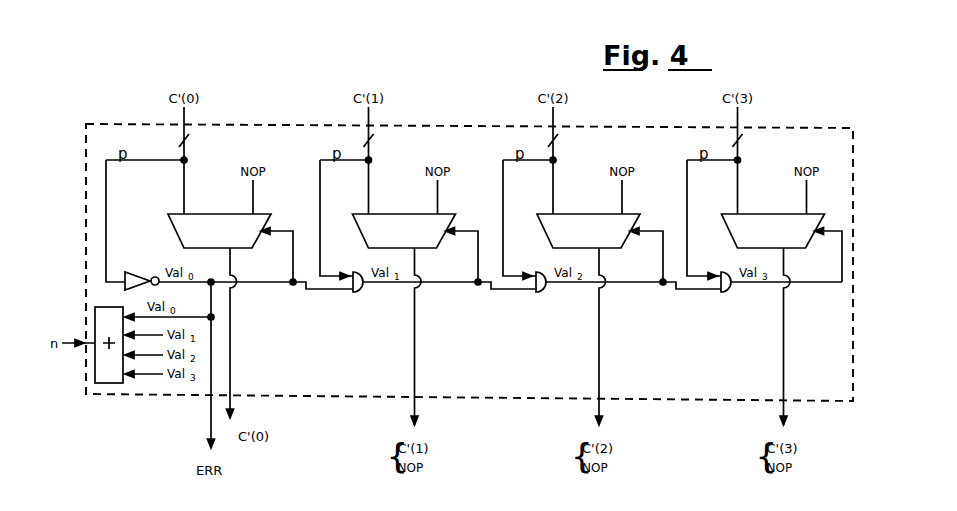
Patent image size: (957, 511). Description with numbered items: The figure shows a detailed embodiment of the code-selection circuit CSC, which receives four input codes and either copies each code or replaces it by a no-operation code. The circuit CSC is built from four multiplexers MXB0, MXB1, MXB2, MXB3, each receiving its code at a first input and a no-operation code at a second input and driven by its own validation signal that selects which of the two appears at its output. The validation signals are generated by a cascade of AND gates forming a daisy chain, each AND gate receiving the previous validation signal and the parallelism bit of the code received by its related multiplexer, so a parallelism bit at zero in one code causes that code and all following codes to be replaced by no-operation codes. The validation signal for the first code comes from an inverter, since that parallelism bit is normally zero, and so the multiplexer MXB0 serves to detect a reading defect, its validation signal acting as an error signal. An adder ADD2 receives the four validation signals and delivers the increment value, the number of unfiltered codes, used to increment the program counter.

The code-selection circuit CSC is at (319, 125).
The adder ADD2 is at (108, 383).
The multiplexer MXB0 is at (247, 242).
The multiplexer MXB1 is at (432, 242).
The multiplexer MXB2 is at (616, 242).
The multiplexer MXB3 is at (801, 242).